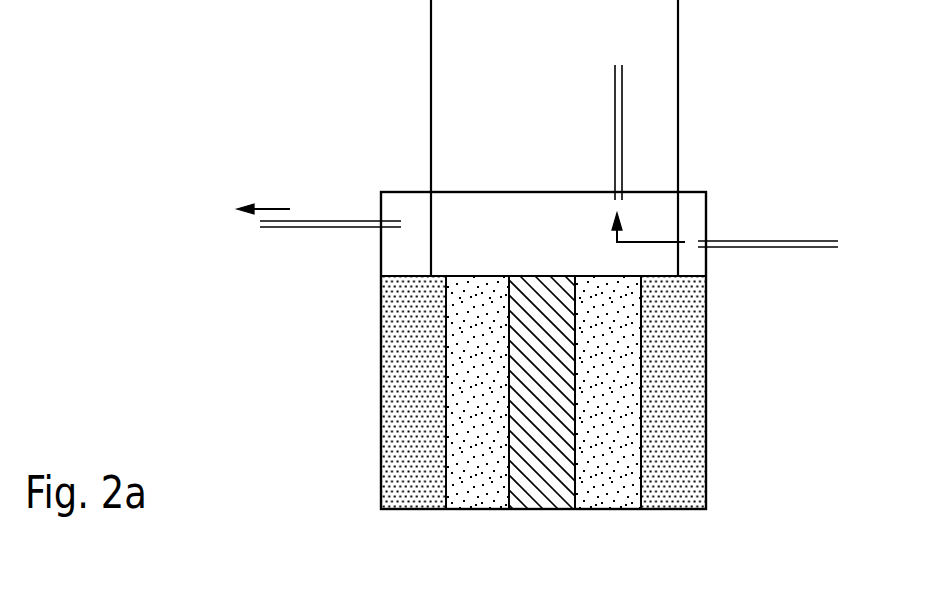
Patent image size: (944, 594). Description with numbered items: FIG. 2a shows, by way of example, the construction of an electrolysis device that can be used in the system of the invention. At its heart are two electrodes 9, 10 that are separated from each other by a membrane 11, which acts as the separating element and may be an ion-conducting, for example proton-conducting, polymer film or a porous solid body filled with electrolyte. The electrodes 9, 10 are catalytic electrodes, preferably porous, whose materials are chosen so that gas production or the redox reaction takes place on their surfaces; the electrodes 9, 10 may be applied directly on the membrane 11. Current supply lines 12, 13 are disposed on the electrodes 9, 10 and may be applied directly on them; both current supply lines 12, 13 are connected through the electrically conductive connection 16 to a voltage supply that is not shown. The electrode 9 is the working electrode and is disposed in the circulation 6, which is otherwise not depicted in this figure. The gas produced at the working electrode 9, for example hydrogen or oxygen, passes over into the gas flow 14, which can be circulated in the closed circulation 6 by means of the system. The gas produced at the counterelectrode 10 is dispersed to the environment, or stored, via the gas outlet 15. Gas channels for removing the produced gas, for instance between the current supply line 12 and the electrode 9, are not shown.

The circulation 6 is at (615, 105).
The electrode 9 is at (608, 495).
The electrode 10 is at (477, 495).
The membrane 11 is at (541, 495).
The current supply line 12 is at (675, 495).
The current supply line 13 is at (410, 495).
The gas flow 14 is at (652, 240).
The gas outlet 15 is at (314, 228).
The electrically conductive connection 16 is at (431, 45).